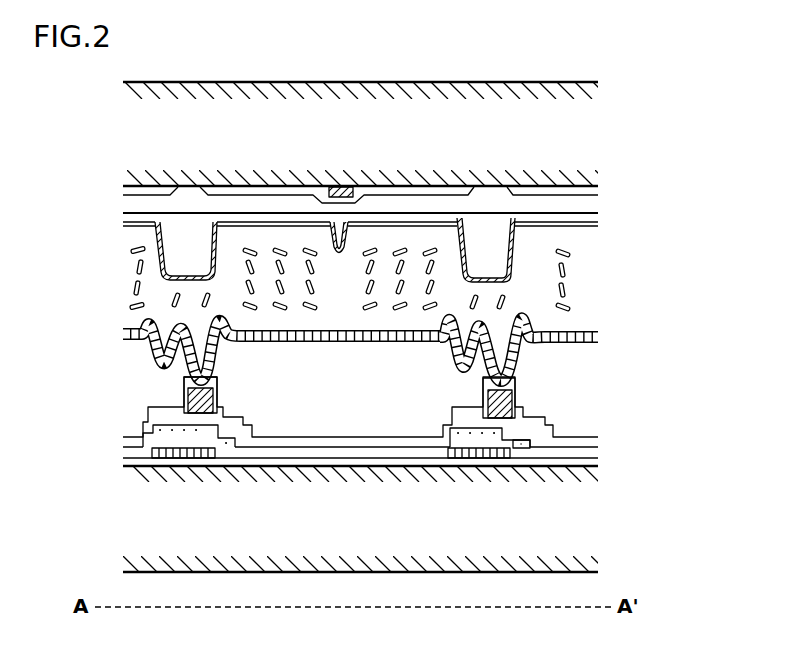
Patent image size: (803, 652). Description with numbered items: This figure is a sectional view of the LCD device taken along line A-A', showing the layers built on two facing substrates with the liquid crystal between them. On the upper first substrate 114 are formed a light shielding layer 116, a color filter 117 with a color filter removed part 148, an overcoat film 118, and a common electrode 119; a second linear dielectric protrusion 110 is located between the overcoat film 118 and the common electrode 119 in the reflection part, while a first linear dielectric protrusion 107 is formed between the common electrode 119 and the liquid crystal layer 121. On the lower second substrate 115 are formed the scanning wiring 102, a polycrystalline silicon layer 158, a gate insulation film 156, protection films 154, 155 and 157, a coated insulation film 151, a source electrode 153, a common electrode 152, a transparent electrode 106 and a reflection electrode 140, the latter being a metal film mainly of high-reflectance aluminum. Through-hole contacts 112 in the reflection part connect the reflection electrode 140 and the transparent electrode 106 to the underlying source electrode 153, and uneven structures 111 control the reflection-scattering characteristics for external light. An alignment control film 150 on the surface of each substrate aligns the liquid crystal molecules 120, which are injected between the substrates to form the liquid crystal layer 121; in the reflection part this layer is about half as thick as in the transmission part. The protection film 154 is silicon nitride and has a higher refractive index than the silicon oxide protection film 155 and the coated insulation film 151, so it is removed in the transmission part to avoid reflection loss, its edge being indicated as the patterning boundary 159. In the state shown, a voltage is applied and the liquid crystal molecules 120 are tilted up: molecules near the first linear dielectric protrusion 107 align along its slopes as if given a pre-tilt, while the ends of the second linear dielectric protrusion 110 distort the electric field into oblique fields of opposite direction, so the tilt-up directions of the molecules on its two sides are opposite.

The scanning wiring 102 is at (522, 448).
The transparent electrode 106 is at (592, 341).
The first linear dielectric protrusion 107 is at (333, 223).
The second linear dielectric protrusion 110 is at (505, 240).
The uneven structure 111 is at (182, 326).
The through-hole contact 112 is at (192, 415).
The first substrate 114 is at (553, 137).
The second substrate 115 is at (542, 537).
The light shielding layer 116 is at (341, 188).
The color filter 117 is at (430, 194).
The overcoat film 118 is at (590, 207).
The common electrode 119 is at (122, 214).
The liquid crystal molecule 120 is at (142, 270).
The liquid crystal layer 121 is at (585, 298).
The reflection electrode 140 is at (125, 334).
The color filter removed part 148 is at (492, 188).
The alignment control film 150 is at (123, 222).
The coated insulation film 151 is at (353, 388).
The common electrode 152 is at (153, 430).
The source electrode 153 is at (517, 393).
The protection film 154 is at (553, 420).
The protection film 155 is at (588, 440).
The gate insulation film 156 is at (590, 456).
The protection film 157 is at (597, 463).
The polycrystalline silicon layer 158 is at (133, 465).
The patterning boundary 159 is at (267, 408).